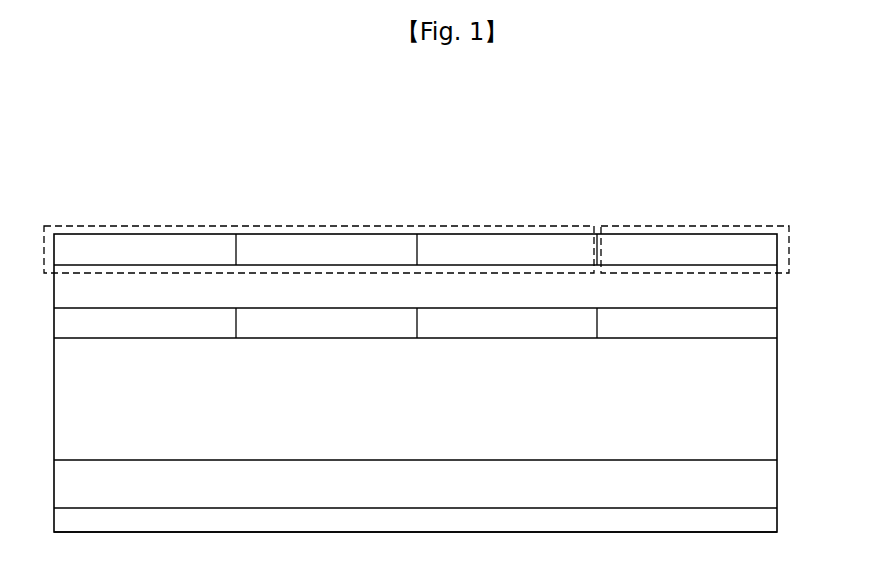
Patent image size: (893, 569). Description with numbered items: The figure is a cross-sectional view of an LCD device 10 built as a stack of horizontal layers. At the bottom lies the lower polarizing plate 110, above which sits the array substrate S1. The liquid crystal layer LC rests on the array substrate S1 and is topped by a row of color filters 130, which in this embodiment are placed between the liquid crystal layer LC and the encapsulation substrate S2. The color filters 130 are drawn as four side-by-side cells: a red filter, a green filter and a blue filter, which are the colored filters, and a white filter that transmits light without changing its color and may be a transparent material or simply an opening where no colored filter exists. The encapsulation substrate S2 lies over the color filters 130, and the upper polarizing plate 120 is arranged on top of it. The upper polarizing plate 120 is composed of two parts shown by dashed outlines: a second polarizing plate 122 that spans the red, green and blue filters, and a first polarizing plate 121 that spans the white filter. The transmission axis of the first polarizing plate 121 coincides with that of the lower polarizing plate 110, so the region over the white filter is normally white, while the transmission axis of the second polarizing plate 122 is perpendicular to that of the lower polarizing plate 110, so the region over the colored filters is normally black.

The LCD device 10 is at (334, 130).
The upper polarizing plate 120 is at (593, 151).
The first polarizing plate 121 is at (695, 223).
The second polarizing plate 122 is at (570, 223).
The color filters 130 is at (770, 324).
The encapsulation substrate S2 is at (770, 288).
The liquid crystal layer LC is at (770, 402).
The array substrate S1 is at (770, 486).
The lower polarizing plate 110 is at (770, 524).